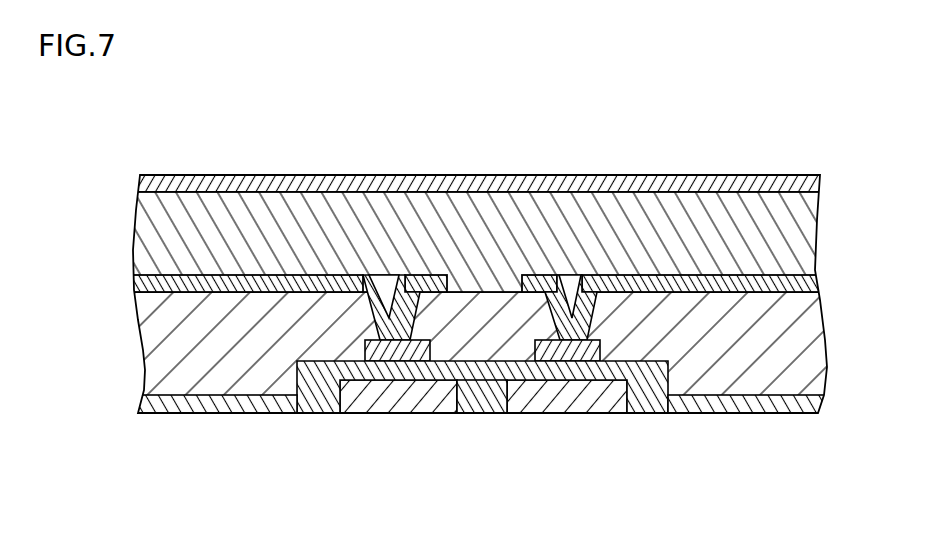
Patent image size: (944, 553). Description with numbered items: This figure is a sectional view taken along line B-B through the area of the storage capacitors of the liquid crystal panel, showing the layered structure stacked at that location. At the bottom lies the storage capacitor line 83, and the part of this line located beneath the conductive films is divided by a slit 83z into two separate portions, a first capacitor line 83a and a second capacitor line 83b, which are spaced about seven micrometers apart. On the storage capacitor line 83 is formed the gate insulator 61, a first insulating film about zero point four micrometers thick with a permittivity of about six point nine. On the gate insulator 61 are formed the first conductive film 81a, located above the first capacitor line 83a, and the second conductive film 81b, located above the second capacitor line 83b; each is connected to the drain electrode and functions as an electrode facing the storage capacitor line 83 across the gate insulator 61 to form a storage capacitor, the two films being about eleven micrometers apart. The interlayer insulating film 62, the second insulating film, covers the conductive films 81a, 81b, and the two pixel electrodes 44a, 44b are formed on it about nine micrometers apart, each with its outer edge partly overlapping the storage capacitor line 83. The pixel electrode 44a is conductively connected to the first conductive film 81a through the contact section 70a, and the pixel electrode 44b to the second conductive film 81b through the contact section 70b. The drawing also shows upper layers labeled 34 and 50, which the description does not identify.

The cover layer 34 is at (806, 183).
The insulating layer 50 is at (793, 242).
The pixel electrode 44a is at (158, 283).
The pixel electrode 44b is at (793, 285).
The contact section 70a is at (389, 318).
The contact section 70b is at (572, 318).
The interlayer insulating film 62 is at (793, 323).
The first conductive film 81a is at (388, 352).
The second conductive film 81b is at (583, 350).
The storage capacitor line 83 is at (482, 387).
The first capacitor line 83a is at (397, 400).
The second capacitor line 83b is at (568, 400).
The slit 83z is at (504, 391).
The gate insulator 61 is at (793, 403).